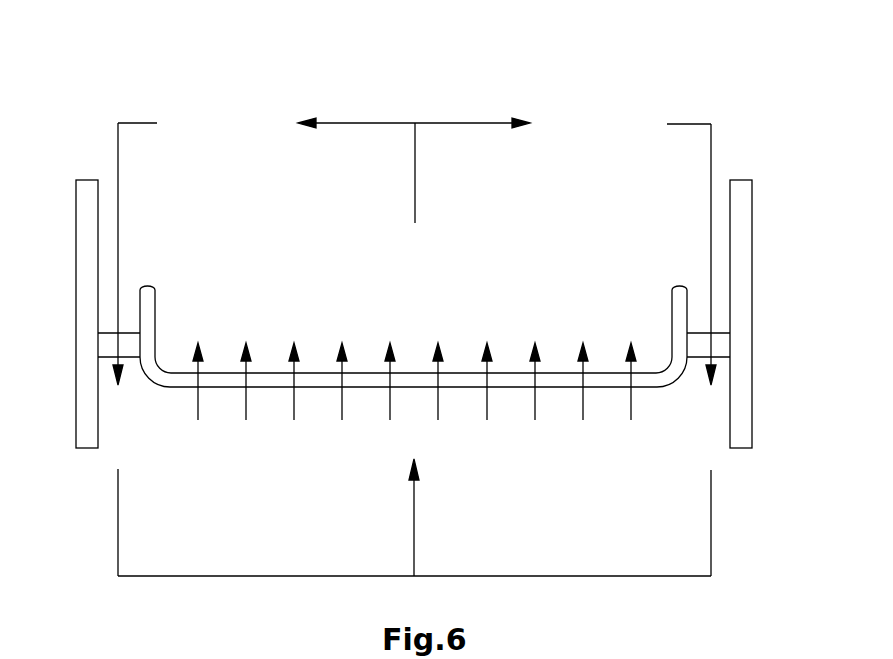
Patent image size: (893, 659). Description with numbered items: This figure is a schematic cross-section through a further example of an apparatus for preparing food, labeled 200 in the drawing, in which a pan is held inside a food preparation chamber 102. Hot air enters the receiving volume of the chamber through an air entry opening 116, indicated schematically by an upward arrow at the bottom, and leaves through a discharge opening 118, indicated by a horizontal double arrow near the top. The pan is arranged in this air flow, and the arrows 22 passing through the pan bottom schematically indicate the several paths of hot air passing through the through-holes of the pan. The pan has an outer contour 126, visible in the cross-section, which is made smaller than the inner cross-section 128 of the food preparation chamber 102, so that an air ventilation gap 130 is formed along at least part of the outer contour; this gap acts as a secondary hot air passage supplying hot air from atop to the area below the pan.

The food preparation chamber 102 is at (611, 178).
The air entry opening 116 is at (414, 518).
The discharge opening 118 is at (387, 123).
The arrow 22 is at (535, 400).
The outer contour 126 is at (133, 352).
The inner cross-section 128 is at (98, 208).
The air ventilation gap 130 is at (118, 278).
The deposition apparatus 200 is at (663, 650).